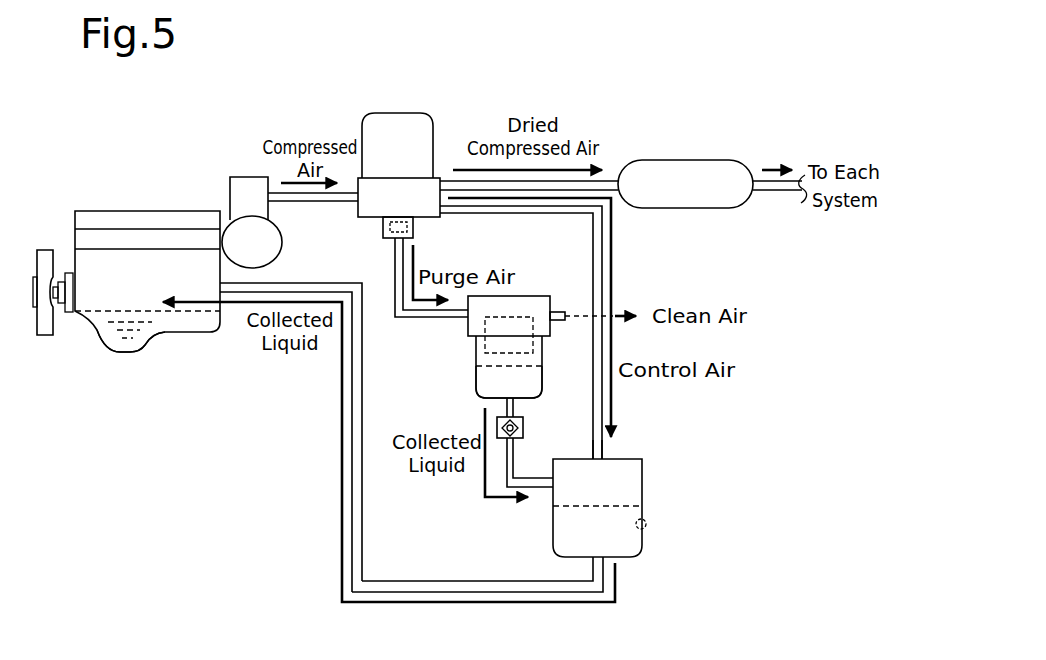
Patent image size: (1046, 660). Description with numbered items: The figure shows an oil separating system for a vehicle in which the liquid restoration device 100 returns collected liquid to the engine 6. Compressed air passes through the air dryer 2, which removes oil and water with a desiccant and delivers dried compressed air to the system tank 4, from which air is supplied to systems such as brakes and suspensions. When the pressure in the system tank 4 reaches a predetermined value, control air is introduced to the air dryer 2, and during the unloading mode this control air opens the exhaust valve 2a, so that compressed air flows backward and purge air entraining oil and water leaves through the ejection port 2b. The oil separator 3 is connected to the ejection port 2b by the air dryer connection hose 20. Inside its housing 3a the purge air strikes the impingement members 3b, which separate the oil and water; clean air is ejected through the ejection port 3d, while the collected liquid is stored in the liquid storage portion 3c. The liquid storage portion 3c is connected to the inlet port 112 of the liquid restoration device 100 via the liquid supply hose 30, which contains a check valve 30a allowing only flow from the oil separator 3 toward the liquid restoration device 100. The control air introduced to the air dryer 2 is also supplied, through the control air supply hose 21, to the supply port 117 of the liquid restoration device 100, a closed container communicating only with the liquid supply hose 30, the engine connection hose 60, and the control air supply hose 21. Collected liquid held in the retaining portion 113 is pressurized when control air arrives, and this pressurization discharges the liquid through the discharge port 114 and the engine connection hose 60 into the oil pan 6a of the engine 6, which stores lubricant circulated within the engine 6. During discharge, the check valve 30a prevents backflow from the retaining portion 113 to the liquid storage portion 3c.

The air dryer 2 is at (407, 113).
The exhaust valve 2a is at (383, 230).
The ejection port 2b is at (405, 240).
The oil separator 3 is at (548, 296).
The housing 3a is at (477, 353).
The impingement members 3b is at (519, 312).
The liquid storage portion 3c is at (478, 393).
The ejection port 3d is at (558, 322).
The system tank 4 is at (707, 160).
The engine 6 is at (145, 211).
The oil pan 6a is at (177, 333).
The air dryer connection hose 20 is at (393, 285).
The control air supply hose 21 is at (590, 226).
The liquid supply hose 30 is at (515, 407).
The check valve 30a is at (523, 432).
The engine connection hose 60 is at (365, 495).
The liquid restoration device 100 is at (643, 483).
The inlet port 112 is at (550, 490).
The retaining portion 113 is at (648, 523).
The discharge port 114 is at (587, 560).
The supply port 117 is at (604, 457).